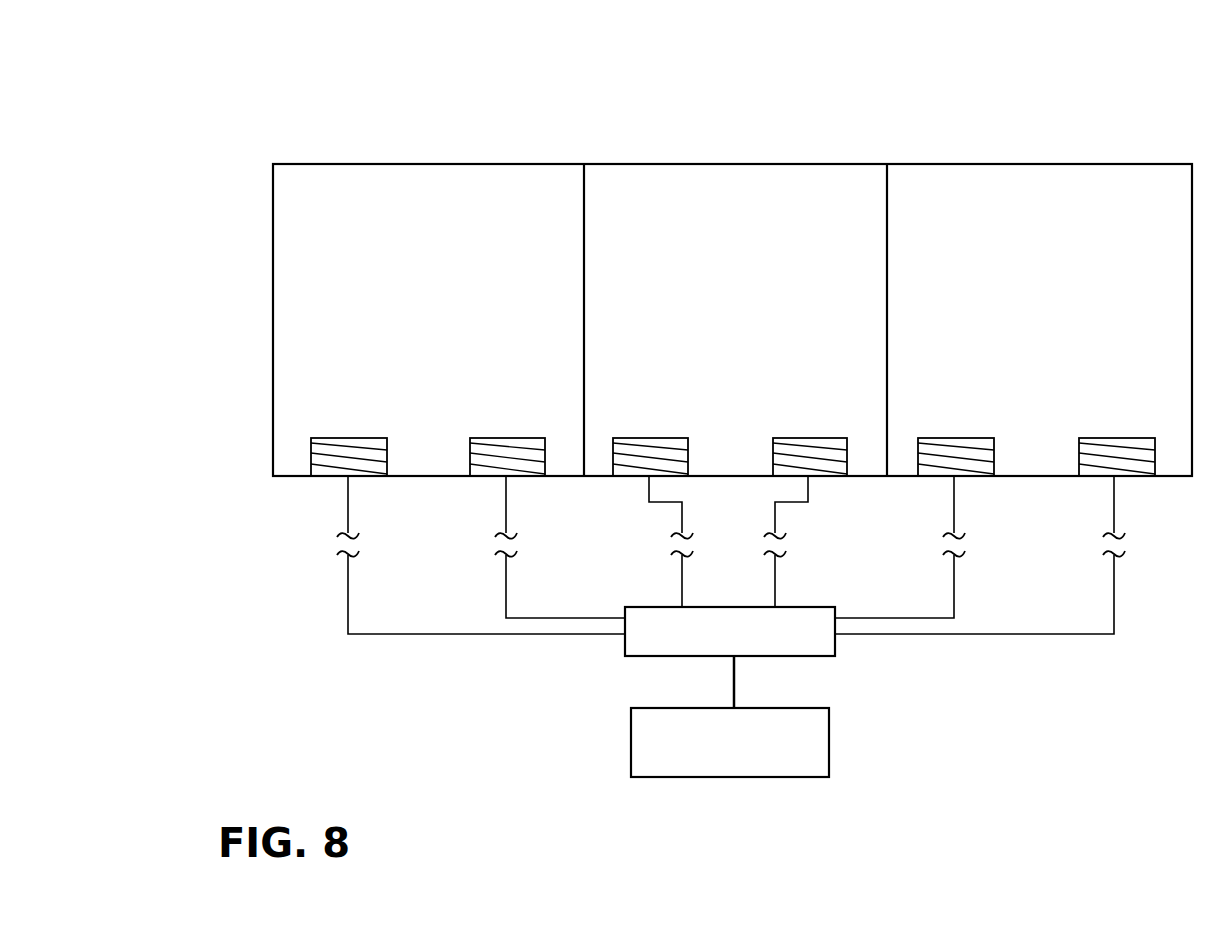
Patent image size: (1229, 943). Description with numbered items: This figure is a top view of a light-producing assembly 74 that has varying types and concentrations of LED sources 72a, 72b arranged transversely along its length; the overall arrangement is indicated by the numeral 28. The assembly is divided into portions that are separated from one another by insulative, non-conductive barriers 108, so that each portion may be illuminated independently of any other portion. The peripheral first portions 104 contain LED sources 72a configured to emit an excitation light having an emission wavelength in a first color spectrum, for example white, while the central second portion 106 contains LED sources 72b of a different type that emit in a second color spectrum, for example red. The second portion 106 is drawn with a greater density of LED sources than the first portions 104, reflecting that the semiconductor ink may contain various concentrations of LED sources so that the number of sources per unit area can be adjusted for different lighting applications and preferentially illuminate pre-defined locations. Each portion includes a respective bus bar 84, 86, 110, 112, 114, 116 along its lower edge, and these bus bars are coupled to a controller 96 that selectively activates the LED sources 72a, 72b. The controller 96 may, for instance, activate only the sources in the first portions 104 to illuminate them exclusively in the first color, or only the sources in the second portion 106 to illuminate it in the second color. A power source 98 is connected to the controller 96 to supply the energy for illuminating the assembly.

The fluid treatment system 28 is at (1162, 106).
The light-producing assembly 74 is at (266, 396).
The barriers 108 is at (585, 178).
The LED sources 72a is at (460, 190).
The LED sources 72b is at (750, 185).
The first portion 104 is at (347, 178).
The second portion 106 is at (690, 178).
The bus bar 84 is at (330, 462).
The bus bar 86 is at (488, 462).
The bus bar 110 is at (636, 462).
The bus bar 112 is at (822, 462).
The bus bar 114 is at (971, 462).
The bus bar 116 is at (1137, 462).
The controller 96 is at (835, 650).
The power source 98 is at (829, 722).